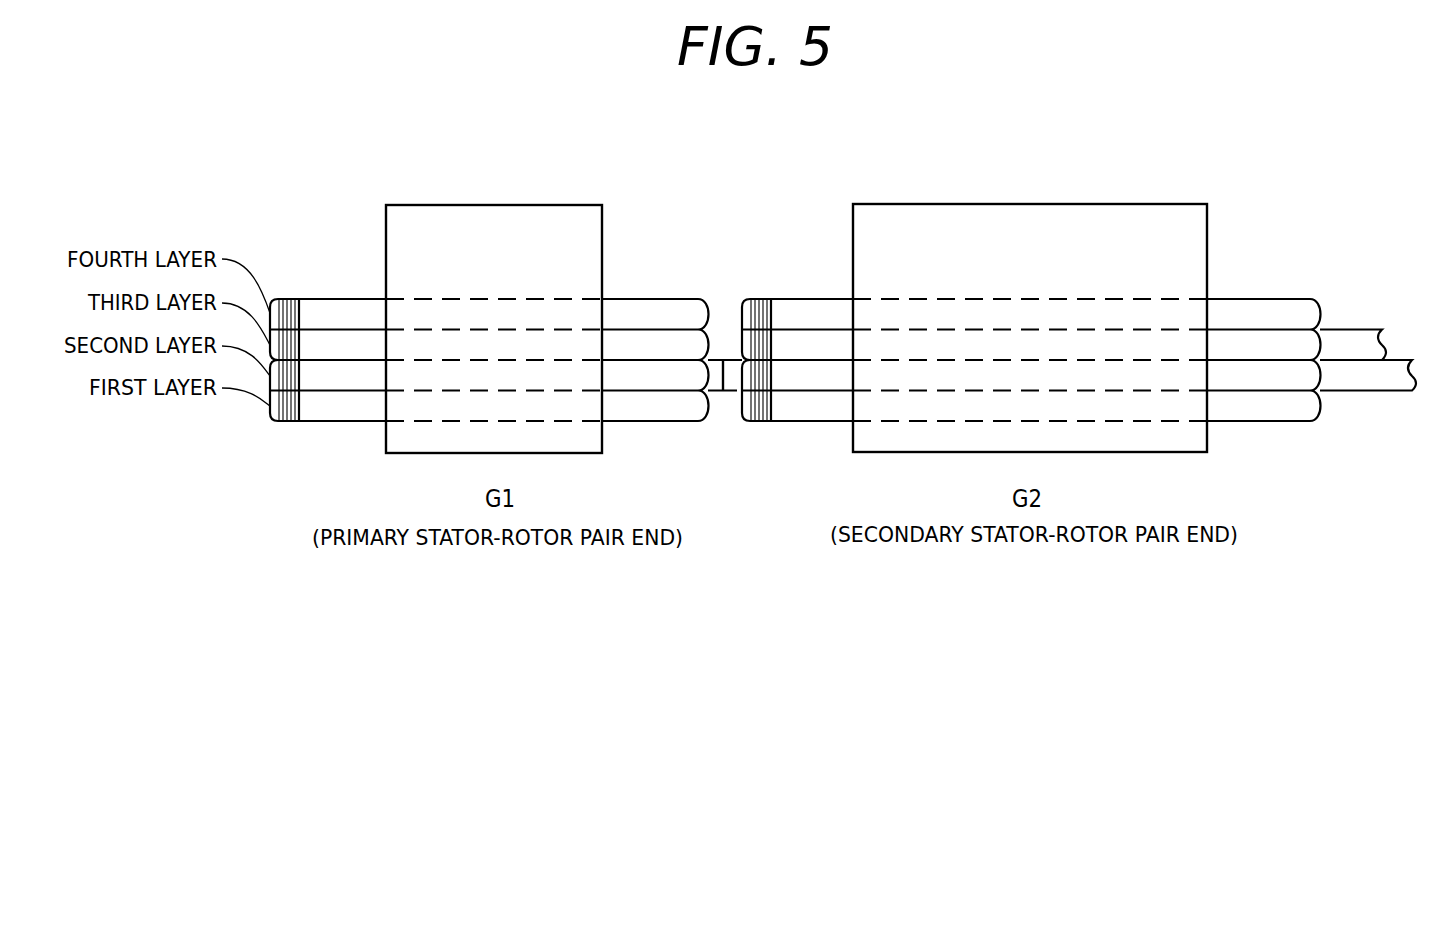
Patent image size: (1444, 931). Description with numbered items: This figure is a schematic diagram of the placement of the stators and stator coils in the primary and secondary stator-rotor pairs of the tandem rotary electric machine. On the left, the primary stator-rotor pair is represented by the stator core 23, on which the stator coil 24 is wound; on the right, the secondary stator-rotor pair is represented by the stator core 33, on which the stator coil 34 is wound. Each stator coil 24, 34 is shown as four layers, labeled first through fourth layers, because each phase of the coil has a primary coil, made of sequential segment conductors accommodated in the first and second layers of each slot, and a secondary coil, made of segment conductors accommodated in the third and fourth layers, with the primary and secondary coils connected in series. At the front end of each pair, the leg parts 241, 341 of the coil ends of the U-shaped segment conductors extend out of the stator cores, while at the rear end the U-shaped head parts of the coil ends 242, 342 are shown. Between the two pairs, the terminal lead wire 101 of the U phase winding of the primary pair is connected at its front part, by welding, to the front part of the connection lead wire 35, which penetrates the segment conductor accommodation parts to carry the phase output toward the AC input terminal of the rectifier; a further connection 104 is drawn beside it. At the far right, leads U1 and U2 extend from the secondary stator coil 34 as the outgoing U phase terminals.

The stator core 23 is at (466, 217).
The stator core 33 is at (1041, 217).
The stator coil 24 is at (479, 346).
The leg parts of the coil ends 241 is at (338, 312).
The coil ends 242 is at (628, 312).
The stator coil 34 is at (1031, 351).
The leg parts of the coil ends 341 is at (802, 312).
The coil ends 342 is at (1247, 310).
The terminal lead wire 101 is at (722, 360).
The connection between primary and secondary windings 104 is at (738, 392).
The connection lead wire 35 is at (733, 360).
The first terminal lead U1 is at (1350, 340).
The second terminal lead U2 is at (1357, 378).